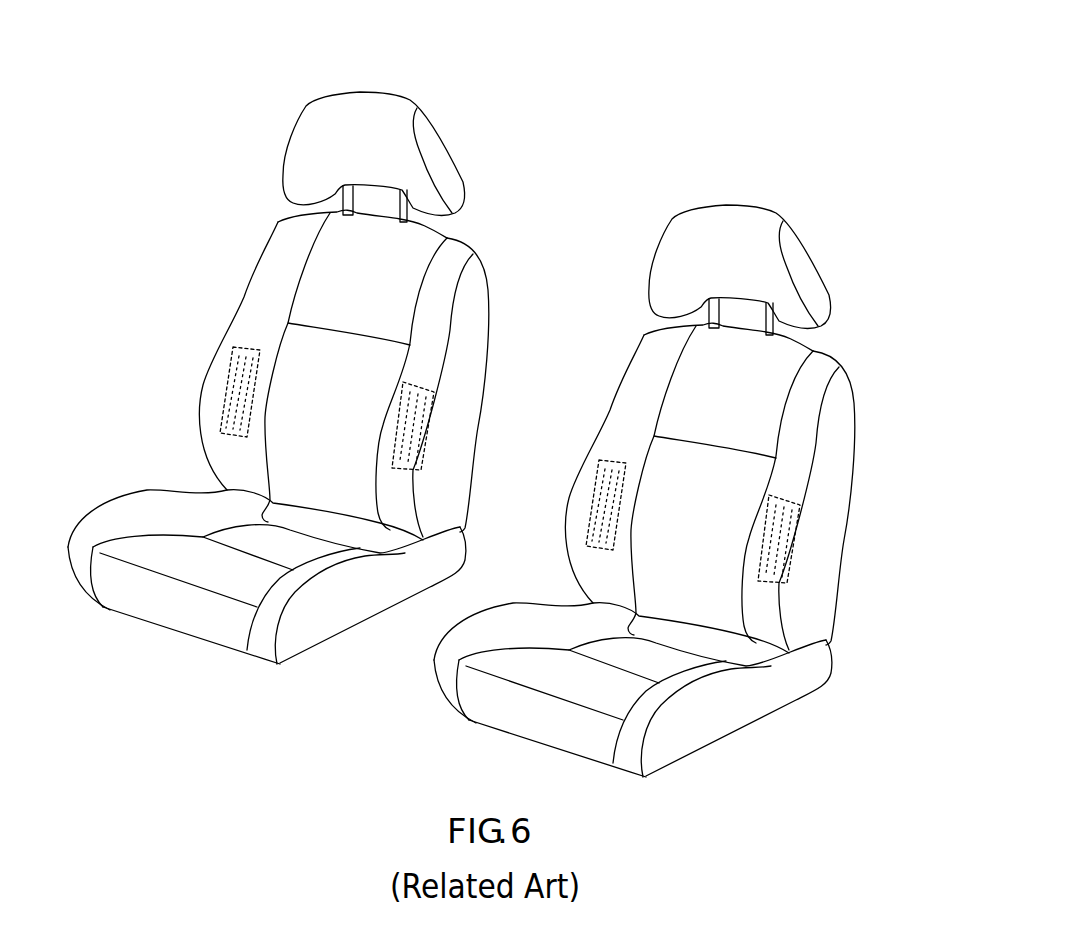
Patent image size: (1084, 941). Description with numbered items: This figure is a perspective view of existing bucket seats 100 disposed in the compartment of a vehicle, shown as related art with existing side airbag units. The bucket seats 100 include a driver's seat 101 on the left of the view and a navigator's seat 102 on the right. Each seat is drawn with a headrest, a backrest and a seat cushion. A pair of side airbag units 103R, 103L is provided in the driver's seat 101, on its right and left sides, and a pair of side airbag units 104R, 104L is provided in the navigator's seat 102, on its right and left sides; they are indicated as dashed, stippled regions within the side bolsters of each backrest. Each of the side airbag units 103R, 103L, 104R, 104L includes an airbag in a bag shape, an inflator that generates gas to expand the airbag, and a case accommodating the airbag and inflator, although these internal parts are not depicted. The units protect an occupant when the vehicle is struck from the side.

The bucket seats 100 is at (415, 13).
The driver's seat 101 is at (308, 343).
The navigator's seat 102 is at (674, 452).
The side airbag unit 103R is at (230, 342).
The side airbag unit 103L is at (445, 387).
The side airbag unit 104R is at (596, 455).
The side airbag unit 104L is at (811, 500).